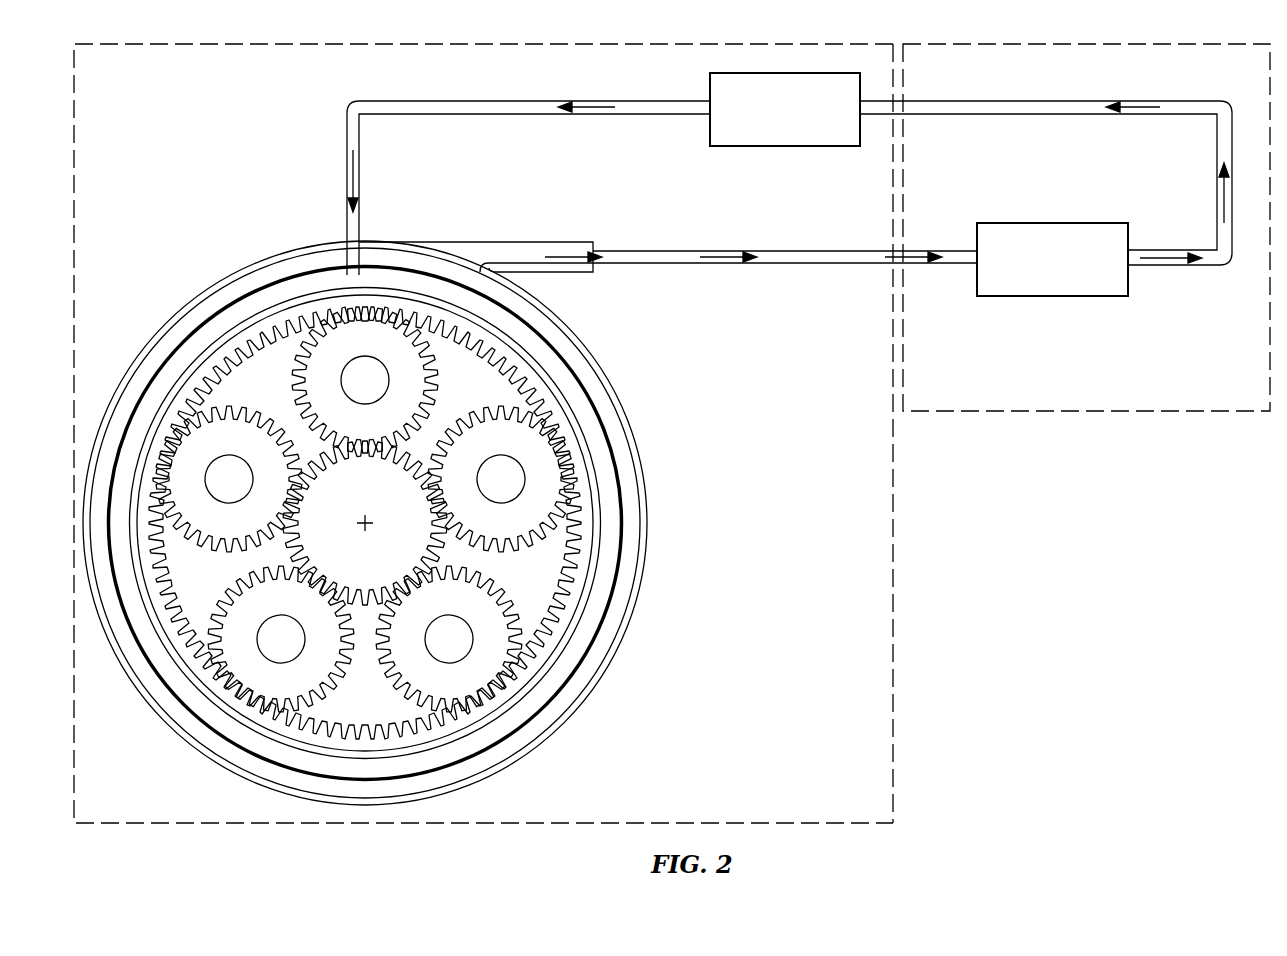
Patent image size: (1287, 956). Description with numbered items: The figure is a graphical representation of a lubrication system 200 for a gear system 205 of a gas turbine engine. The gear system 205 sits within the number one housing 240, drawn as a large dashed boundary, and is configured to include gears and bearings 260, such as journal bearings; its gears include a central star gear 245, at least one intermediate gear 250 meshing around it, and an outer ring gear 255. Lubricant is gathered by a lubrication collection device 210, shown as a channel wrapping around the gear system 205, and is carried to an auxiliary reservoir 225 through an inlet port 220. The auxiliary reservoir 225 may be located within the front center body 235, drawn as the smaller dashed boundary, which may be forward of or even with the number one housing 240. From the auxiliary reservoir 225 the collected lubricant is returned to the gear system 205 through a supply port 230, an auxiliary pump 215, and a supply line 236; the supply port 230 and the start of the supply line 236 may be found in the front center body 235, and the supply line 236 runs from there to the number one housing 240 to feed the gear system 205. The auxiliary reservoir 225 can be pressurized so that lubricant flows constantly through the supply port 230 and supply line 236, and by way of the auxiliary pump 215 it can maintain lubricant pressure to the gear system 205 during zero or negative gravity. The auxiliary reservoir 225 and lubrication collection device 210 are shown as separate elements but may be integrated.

The lubrication system 200 is at (176, 128).
The gear system 205 is at (240, 280).
The lubrication collection device 210 is at (457, 258).
The auxiliary pump 215 is at (745, 147).
The inlet port 220 is at (977, 255).
The auxiliary reservoir 225 is at (1046, 223).
The supply port 230 is at (1126, 255).
The front center body 235 is at (1010, 411).
The supply line 236 is at (455, 107).
The number one housing 240 is at (893, 580).
The star gear 245 is at (382, 486).
The intermediate gear 250 is at (533, 455).
The ring gear 255 is at (585, 493).
The bearings 260 is at (600, 553).